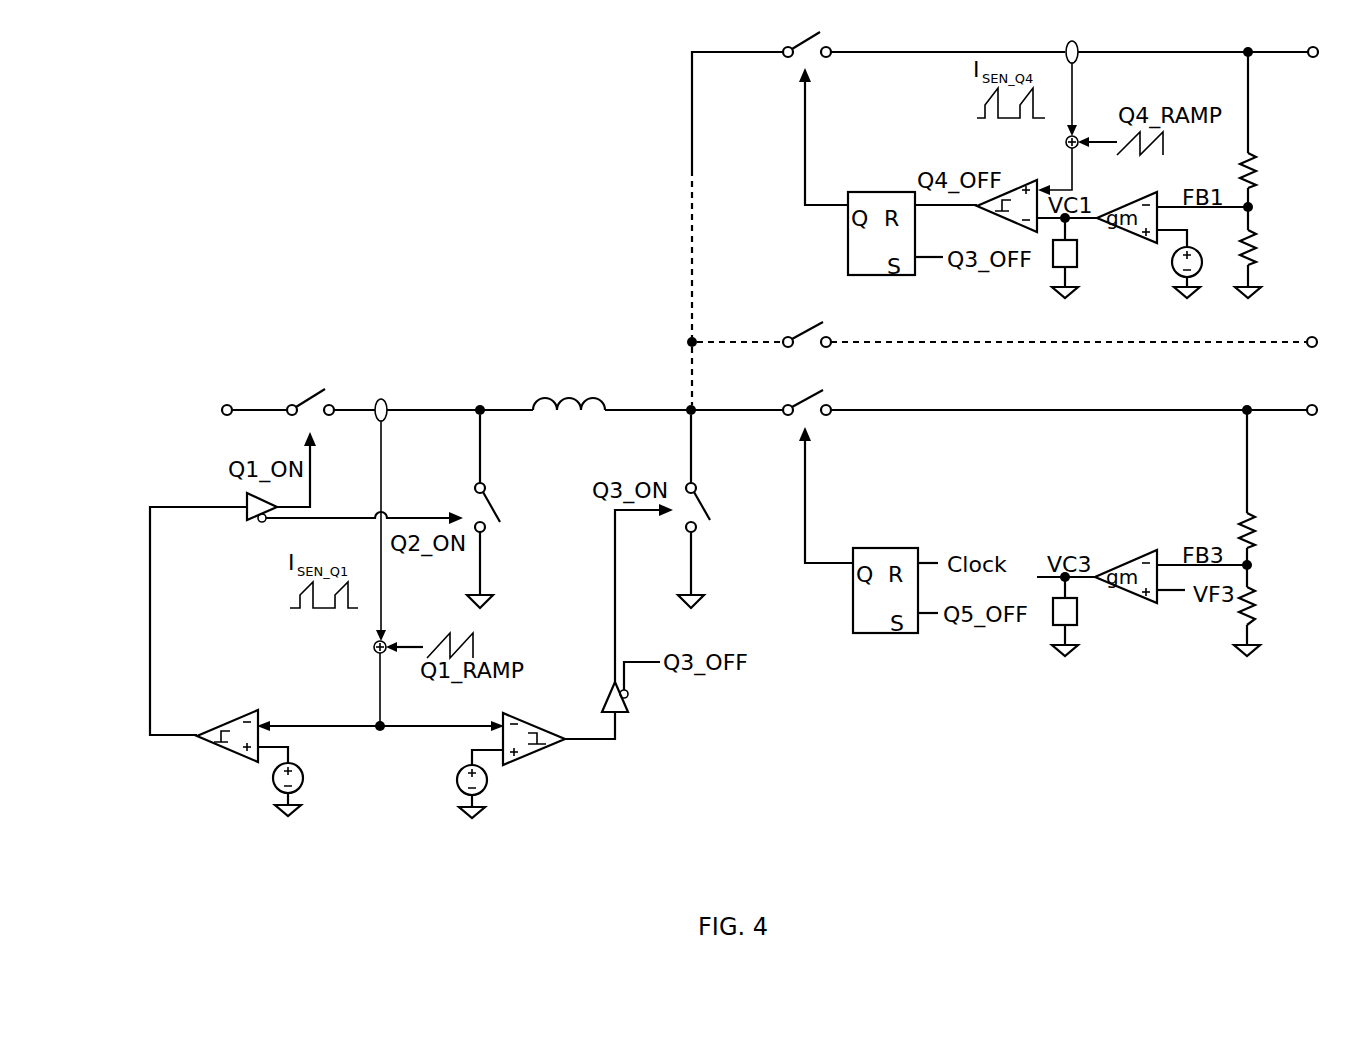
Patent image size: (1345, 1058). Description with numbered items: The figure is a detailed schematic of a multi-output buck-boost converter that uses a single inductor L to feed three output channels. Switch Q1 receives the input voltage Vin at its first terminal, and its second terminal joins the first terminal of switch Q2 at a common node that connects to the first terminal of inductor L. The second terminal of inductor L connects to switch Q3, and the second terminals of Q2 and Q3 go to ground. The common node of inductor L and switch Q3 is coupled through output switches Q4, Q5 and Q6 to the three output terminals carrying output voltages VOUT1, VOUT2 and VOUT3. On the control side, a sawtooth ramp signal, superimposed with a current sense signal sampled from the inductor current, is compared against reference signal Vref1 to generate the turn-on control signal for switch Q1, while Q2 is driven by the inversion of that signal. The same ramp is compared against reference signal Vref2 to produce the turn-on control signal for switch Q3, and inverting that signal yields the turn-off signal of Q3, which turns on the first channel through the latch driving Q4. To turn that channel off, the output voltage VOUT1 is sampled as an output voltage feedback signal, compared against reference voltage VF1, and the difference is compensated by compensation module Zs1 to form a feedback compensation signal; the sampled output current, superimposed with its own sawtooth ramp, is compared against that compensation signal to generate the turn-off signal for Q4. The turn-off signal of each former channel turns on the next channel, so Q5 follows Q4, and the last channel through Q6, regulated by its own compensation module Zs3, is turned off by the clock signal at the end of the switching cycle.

The switch Q1 is at (310, 389).
The switch Q2 is at (503, 511).
The switch Q3 is at (713, 511).
The switch Q4 is at (803, 35).
The switch Q5 is at (804, 322).
The switch Q6 is at (804, 393).
The inductor L is at (569, 386).
The input voltage Vin is at (204, 410).
The output voltage of channel OUT1 VOUT1 is at (1268, 40).
The output voltage of channel OUT2 VOUT2 is at (1265, 330).
The output voltage of channel OUT3 VOUT3 is at (1265, 398).
The reference signal Vref1 is at (259, 781).
The reference signal Vref2 is at (453, 784).
The reference voltage VF1 is at (1195, 258).
The compensation module Zs1 is at (1065, 258).
The compensation module Zs3 is at (1065, 616).